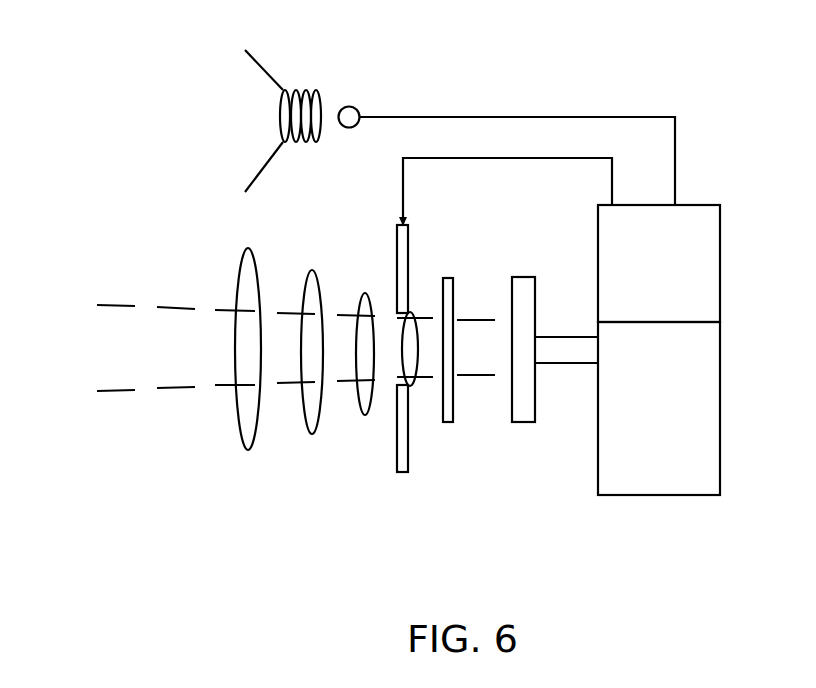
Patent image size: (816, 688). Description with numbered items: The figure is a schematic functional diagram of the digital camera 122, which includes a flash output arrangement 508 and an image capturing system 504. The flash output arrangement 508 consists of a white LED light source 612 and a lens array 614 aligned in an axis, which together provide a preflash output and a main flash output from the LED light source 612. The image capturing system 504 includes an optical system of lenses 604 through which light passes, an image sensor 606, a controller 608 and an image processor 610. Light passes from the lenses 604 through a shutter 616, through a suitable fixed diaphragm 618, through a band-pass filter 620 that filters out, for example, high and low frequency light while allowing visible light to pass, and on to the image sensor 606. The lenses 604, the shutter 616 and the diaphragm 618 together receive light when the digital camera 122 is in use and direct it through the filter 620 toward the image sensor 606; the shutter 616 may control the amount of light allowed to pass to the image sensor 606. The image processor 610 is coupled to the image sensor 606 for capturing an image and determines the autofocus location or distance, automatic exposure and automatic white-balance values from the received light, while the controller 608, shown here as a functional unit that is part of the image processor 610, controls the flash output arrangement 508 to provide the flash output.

The digital camera 122 is at (228, 23).
The image capturing system 504 is at (737, 535).
The flash output arrangement 508 is at (387, 192).
The lenses 604 is at (382, 453).
The image sensor 606 is at (527, 413).
The controller 608 is at (672, 295).
The image processor 610 is at (672, 443).
The white LED light source 612 is at (358, 107).
The lens array 614 is at (293, 87).
The shutter 616 is at (405, 472).
The fixed diaphragm 618 is at (412, 363).
The band-pass filter 620 is at (452, 422).